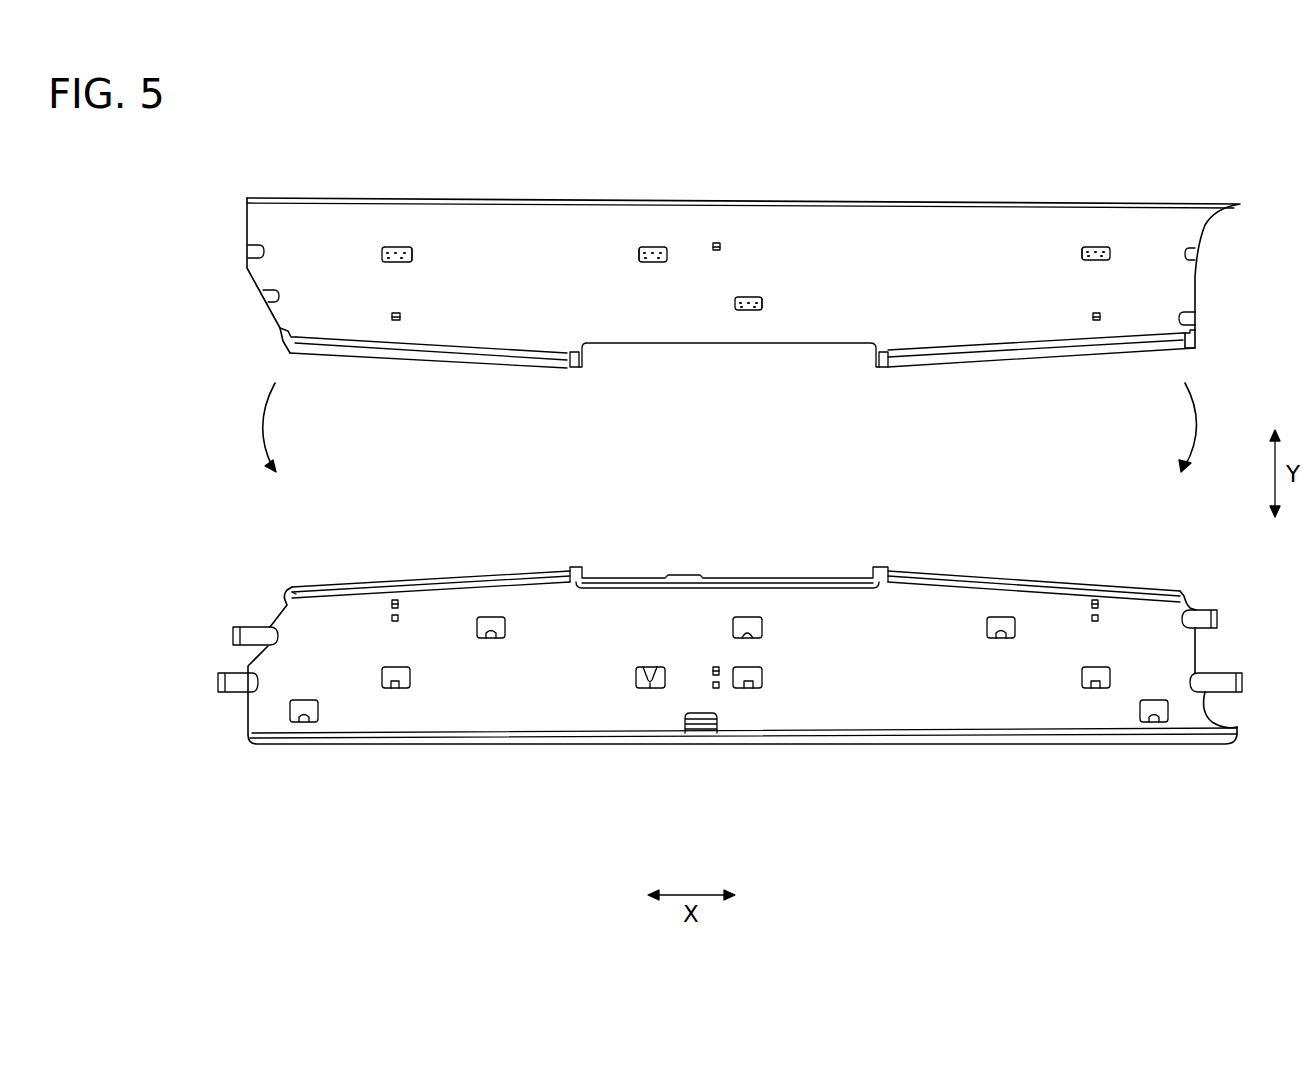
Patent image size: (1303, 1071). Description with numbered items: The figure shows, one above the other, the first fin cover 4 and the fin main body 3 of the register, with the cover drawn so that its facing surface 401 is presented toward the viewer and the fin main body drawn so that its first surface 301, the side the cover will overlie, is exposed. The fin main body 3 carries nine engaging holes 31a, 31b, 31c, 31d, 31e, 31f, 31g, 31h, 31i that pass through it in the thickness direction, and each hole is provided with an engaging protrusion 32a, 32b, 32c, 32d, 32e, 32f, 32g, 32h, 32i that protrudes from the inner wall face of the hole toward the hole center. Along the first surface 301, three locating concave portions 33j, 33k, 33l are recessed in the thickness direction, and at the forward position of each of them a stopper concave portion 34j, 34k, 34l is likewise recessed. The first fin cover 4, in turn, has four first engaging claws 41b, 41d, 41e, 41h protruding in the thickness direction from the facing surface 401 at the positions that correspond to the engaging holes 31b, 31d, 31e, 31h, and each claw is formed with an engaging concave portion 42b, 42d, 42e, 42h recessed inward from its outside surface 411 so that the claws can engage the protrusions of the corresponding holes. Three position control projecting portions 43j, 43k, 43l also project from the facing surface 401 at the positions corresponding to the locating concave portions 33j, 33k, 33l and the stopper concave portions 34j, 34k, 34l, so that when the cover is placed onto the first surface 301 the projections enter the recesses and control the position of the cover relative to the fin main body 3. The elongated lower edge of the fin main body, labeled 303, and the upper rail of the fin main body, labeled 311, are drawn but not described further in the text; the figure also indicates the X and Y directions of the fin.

The first fin cover 4 is at (303, 183).
The facing surface 401 is at (288, 235).
The outside surface 411 is at (355, 248).
The engaging concave portion 42b is at (397, 247).
The first engaging claw 41b is at (411, 252).
The first engaging claw 41d is at (639, 252).
The engaging concave portion 42d is at (645, 247).
The position control projecting portion 43k is at (712, 243).
The engaging concave portion 42e is at (748, 297).
The first engaging claw 41e is at (763, 305).
The first engaging claw 41h is at (1082, 253).
The engaging concave portion 42h is at (1097, 247).
The position control projecting portion 43j is at (396, 322).
The position control projecting portion 43l is at (1097, 322).
The fin main body 3 is at (328, 567).
The first surface 301 is at (300, 612).
The upper rail of lower frame member 311 is at (657, 665).
The bottom rail of lower frame member 303 is at (925, 745).
The stopper concave portion 34j is at (392, 618).
The locating concave portion 33j is at (397, 600).
The engaging hole 31c is at (488, 632).
The engaging protrusion 32c is at (504, 618).
The engaging hole 31e is at (748, 636).
The engaging protrusion 32e is at (760, 617).
The engaging hole 31g is at (1000, 636).
The engaging protrusion 32g is at (1003, 617).
The locating concave portion 33l is at (1096, 600).
The stopper concave portion 34l is at (1100, 617).
The engaging hole 31a is at (290, 712).
The engaging protrusion 32a is at (303, 722).
The engaging hole 31b is at (382, 680).
The engaging protrusion 32b is at (395, 688).
The engaging hole 31d is at (636, 678).
The engaging protrusion 32d is at (648, 688).
The locating concave portion 33k is at (697, 714).
The stopper concave portion 34k is at (718, 687).
The engaging hole 31f is at (765, 678).
The engaging protrusion 32f is at (749, 688).
The engaging hole 31h is at (1082, 675).
The engaging protrusion 32h is at (1094, 688).
The engaging hole 31i is at (1168, 710).
The engaging protrusion 32i is at (1152, 722).